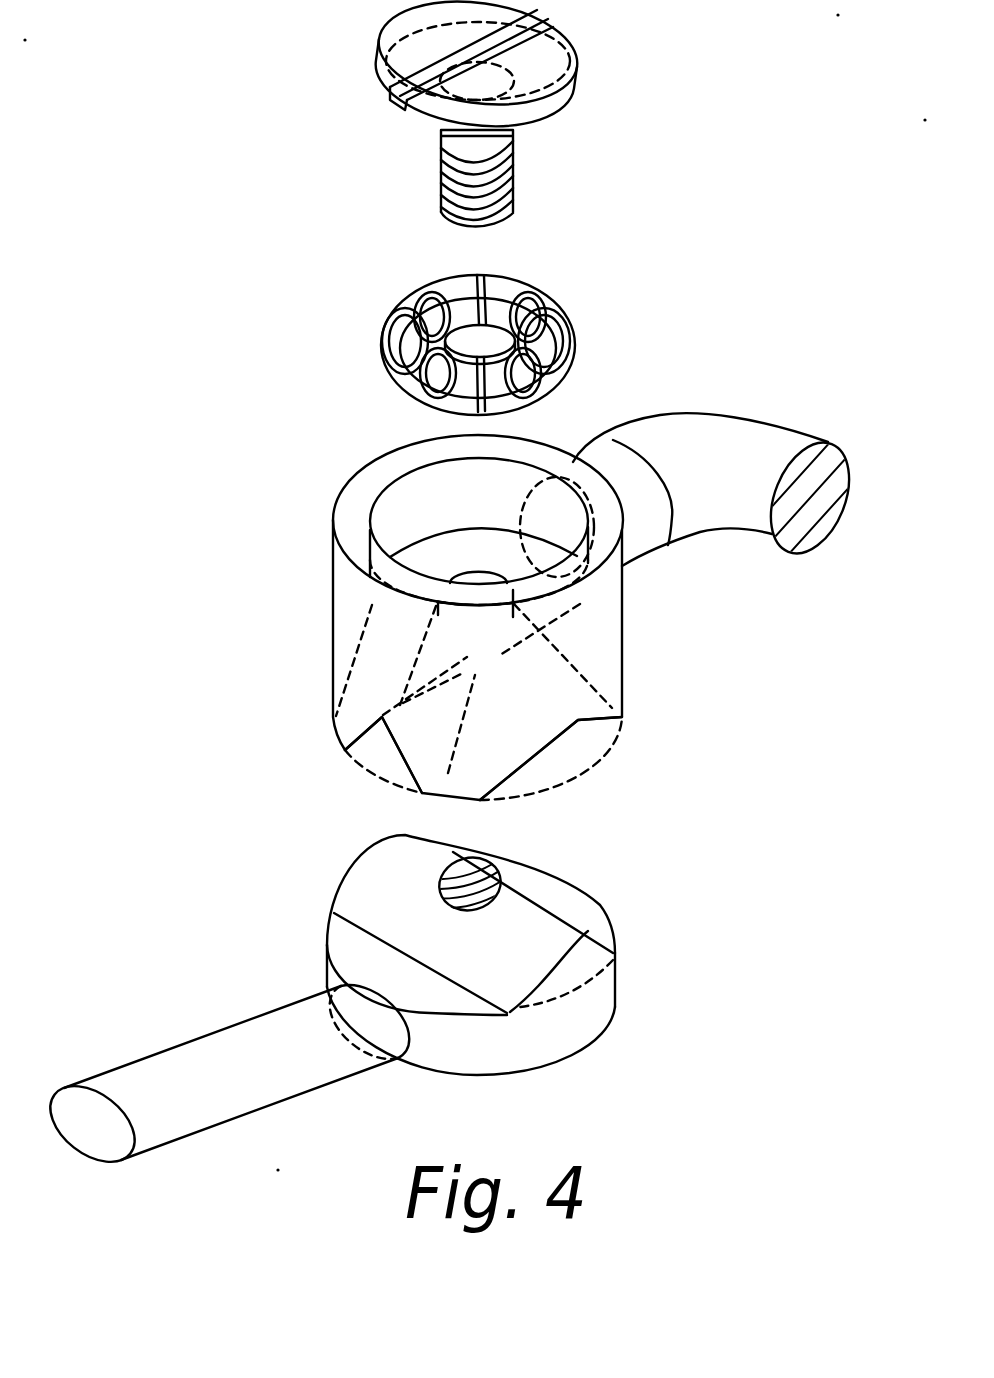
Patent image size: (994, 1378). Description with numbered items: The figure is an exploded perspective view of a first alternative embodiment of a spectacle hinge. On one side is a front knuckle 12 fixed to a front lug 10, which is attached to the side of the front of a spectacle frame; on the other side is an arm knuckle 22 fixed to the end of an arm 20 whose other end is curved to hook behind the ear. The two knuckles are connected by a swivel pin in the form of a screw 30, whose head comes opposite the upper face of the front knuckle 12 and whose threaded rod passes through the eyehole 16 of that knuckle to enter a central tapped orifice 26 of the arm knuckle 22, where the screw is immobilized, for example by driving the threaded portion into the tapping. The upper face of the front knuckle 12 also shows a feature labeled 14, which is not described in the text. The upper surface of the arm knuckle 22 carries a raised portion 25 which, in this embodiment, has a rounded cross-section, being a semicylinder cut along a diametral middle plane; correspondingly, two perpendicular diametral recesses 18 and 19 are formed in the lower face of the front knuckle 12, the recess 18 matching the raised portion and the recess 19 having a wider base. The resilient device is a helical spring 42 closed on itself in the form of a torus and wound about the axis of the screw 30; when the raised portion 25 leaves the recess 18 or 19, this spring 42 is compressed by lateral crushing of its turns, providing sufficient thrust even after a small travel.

The front lug 10 is at (732, 462).
The front knuckle 12 is at (432, 541).
The counterbore recess 14 is at (418, 507).
The eyehole 16 is at (479, 567).
The diametral recess 18 is at (380, 753).
The diametral recess 19 is at (582, 740).
The arm 20 is at (218, 1068).
The arm knuckle 22 is at (477, 943).
The raised portion 25 is at (397, 893).
The central tapped orifice 26 is at (478, 888).
The screw 30 is at (340, 93).
The helical spring 42 is at (360, 305).